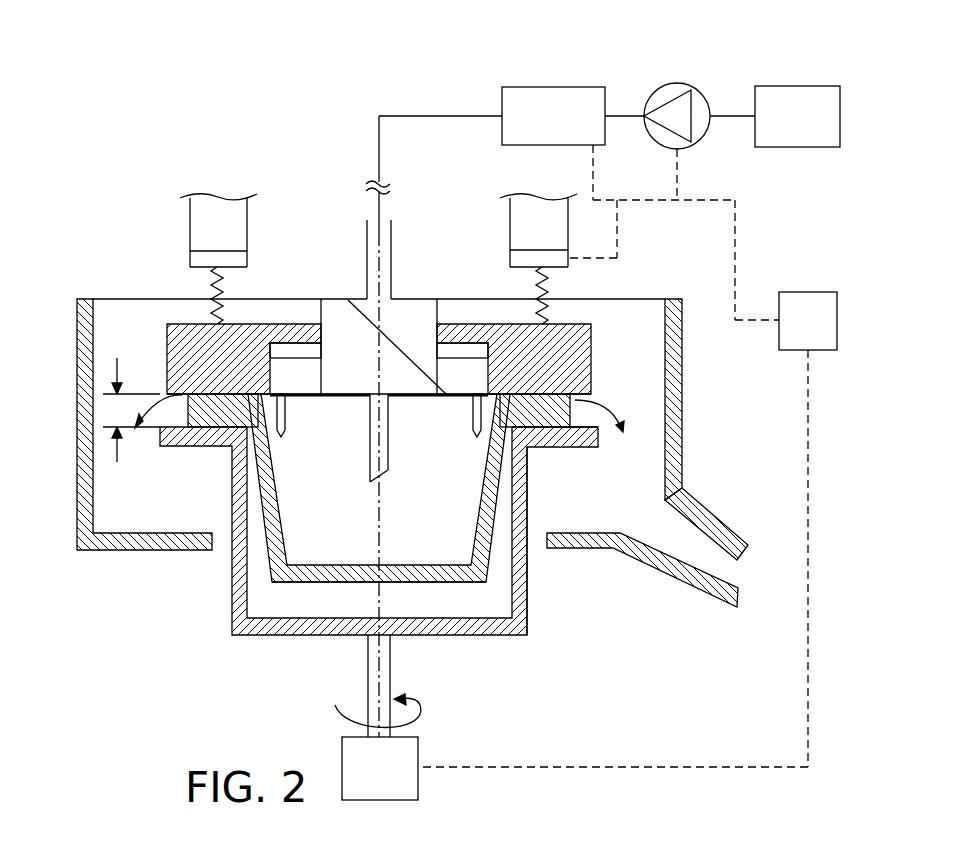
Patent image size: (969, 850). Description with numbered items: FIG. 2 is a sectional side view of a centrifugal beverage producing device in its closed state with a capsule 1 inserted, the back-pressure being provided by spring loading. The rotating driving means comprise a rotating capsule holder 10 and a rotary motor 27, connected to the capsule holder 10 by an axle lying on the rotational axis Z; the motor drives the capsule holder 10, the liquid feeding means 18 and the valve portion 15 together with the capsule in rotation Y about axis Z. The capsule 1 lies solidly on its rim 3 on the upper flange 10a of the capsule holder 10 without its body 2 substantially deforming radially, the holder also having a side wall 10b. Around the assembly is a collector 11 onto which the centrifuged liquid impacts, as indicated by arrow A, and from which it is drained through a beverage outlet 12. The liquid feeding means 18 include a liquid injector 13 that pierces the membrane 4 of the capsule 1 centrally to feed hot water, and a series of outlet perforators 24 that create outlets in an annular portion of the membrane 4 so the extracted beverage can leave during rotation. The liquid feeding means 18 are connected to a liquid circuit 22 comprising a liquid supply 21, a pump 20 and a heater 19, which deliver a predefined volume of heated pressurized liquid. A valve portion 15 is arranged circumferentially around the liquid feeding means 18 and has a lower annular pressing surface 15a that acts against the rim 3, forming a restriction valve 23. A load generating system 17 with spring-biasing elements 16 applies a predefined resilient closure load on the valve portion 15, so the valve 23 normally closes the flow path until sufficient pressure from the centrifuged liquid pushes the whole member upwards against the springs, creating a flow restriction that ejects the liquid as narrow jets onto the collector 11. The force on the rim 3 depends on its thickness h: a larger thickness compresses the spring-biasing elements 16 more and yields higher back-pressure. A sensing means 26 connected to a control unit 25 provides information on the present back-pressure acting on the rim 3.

The capsule 1 is at (253, 572).
The body 2 is at (480, 513).
The rim 3 is at (210, 418).
The membrane 4 is at (493, 410).
The rotating capsule holder 10 is at (240, 607).
The upper flange of the capsule holder 10a is at (549, 447).
The housing side wall 10b is at (527, 502).
The collector 11 is at (80, 376).
The beverage outlet 12 is at (722, 562).
The liquid injector 13 is at (370, 463).
The valve portion 15 is at (578, 330).
The lower annular pressing surface 15a is at (560, 390).
The spring-biasing elements 16 is at (212, 285).
The load generating system 17 is at (190, 218).
The liquid feeding means 18 is at (345, 303).
The heater 19 is at (566, 128).
The pump 20 is at (677, 83).
The liquid supply 21 is at (810, 128).
The liquid circuit 22 is at (432, 114).
The restriction valve 23 is at (627, 407).
The outlet perforators 24 is at (288, 417).
The control unit 25 is at (821, 333).
The sensing means 26 is at (247, 255).
The rotary motor 27 is at (393, 780).
The arrow A is at (627, 397).
The rotational axis Z is at (391, 661).
The rotation Y is at (387, 711).
The thickness of the rim h is at (131, 410).